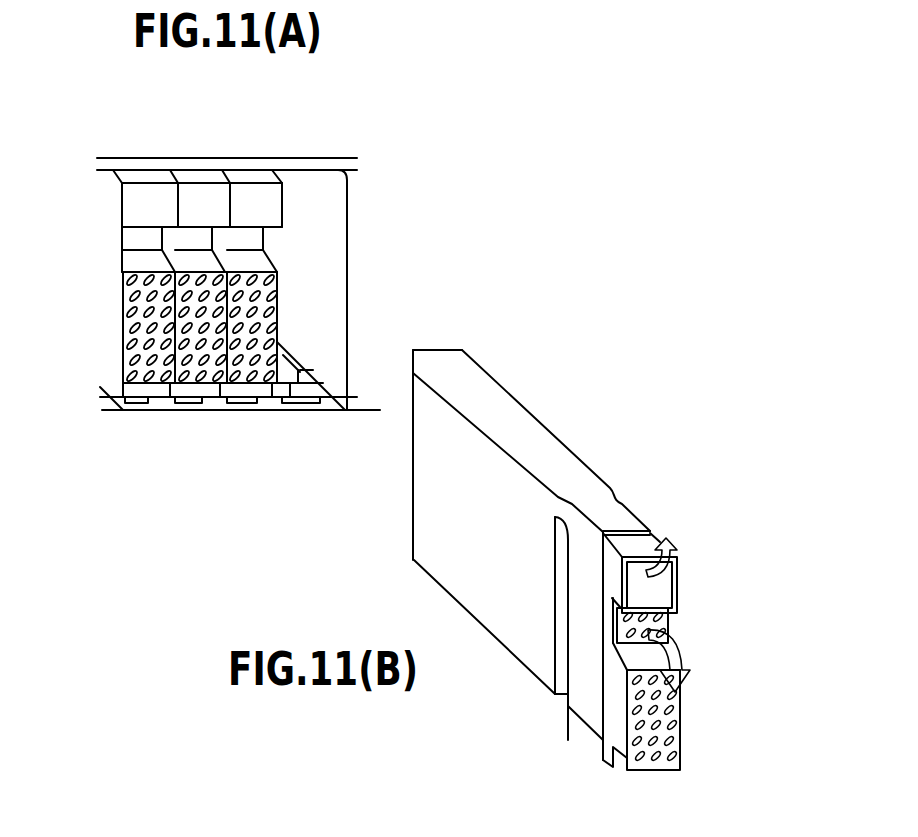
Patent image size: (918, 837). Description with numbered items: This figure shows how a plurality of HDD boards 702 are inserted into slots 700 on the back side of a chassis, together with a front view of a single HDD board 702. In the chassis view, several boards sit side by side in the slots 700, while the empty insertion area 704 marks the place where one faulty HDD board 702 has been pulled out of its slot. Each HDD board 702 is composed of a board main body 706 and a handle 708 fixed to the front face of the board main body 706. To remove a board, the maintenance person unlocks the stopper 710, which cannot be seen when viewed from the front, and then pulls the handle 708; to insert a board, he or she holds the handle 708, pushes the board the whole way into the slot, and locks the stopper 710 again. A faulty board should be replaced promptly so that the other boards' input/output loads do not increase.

In FIG. 11A, the slots 700 is at (304, 162).
In FIG. 11A, the insertion area 704 is at (312, 260).
In FIG. 11B, the HDD board 702 is at (540, 396).
In FIG. 11B, the board main body 706 is at (582, 541).
In FIG. 11B, the stopper 710 is at (658, 590).
In FIG. 11B, the handle 708 is at (673, 708).